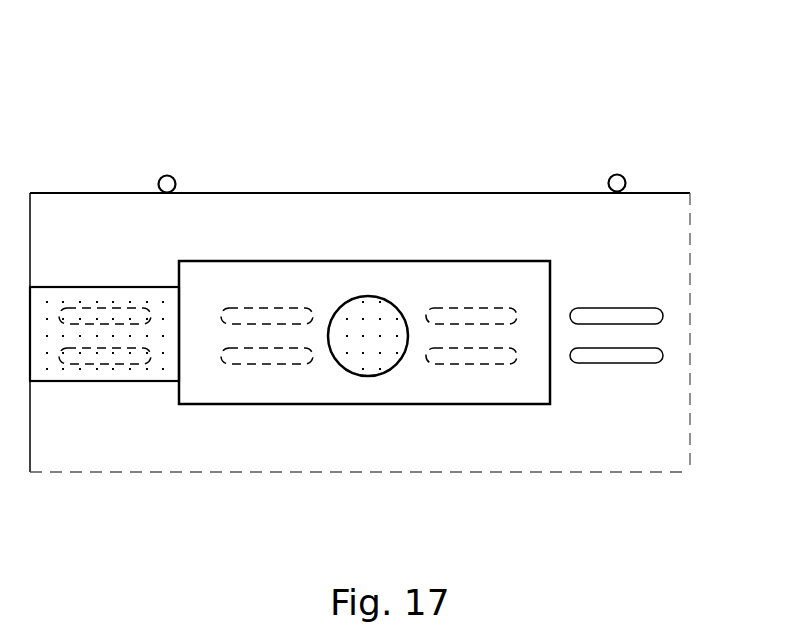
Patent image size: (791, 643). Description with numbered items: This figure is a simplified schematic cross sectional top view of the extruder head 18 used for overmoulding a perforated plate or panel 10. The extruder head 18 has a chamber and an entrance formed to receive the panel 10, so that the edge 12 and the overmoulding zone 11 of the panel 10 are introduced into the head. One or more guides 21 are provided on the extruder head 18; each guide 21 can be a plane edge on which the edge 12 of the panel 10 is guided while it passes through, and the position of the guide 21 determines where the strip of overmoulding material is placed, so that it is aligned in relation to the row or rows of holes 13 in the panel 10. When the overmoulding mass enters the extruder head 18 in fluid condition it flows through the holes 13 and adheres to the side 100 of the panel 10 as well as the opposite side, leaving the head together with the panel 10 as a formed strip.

The inner side panel 10 is at (461, 150).
The edge 12 is at (73, 193).
The side of the panel 100 is at (397, 238).
The guide 21 is at (167, 175).
The overmoulding zone 11 is at (160, 383).
The extruder head 18 is at (319, 381).
The holes 13 is at (642, 359).